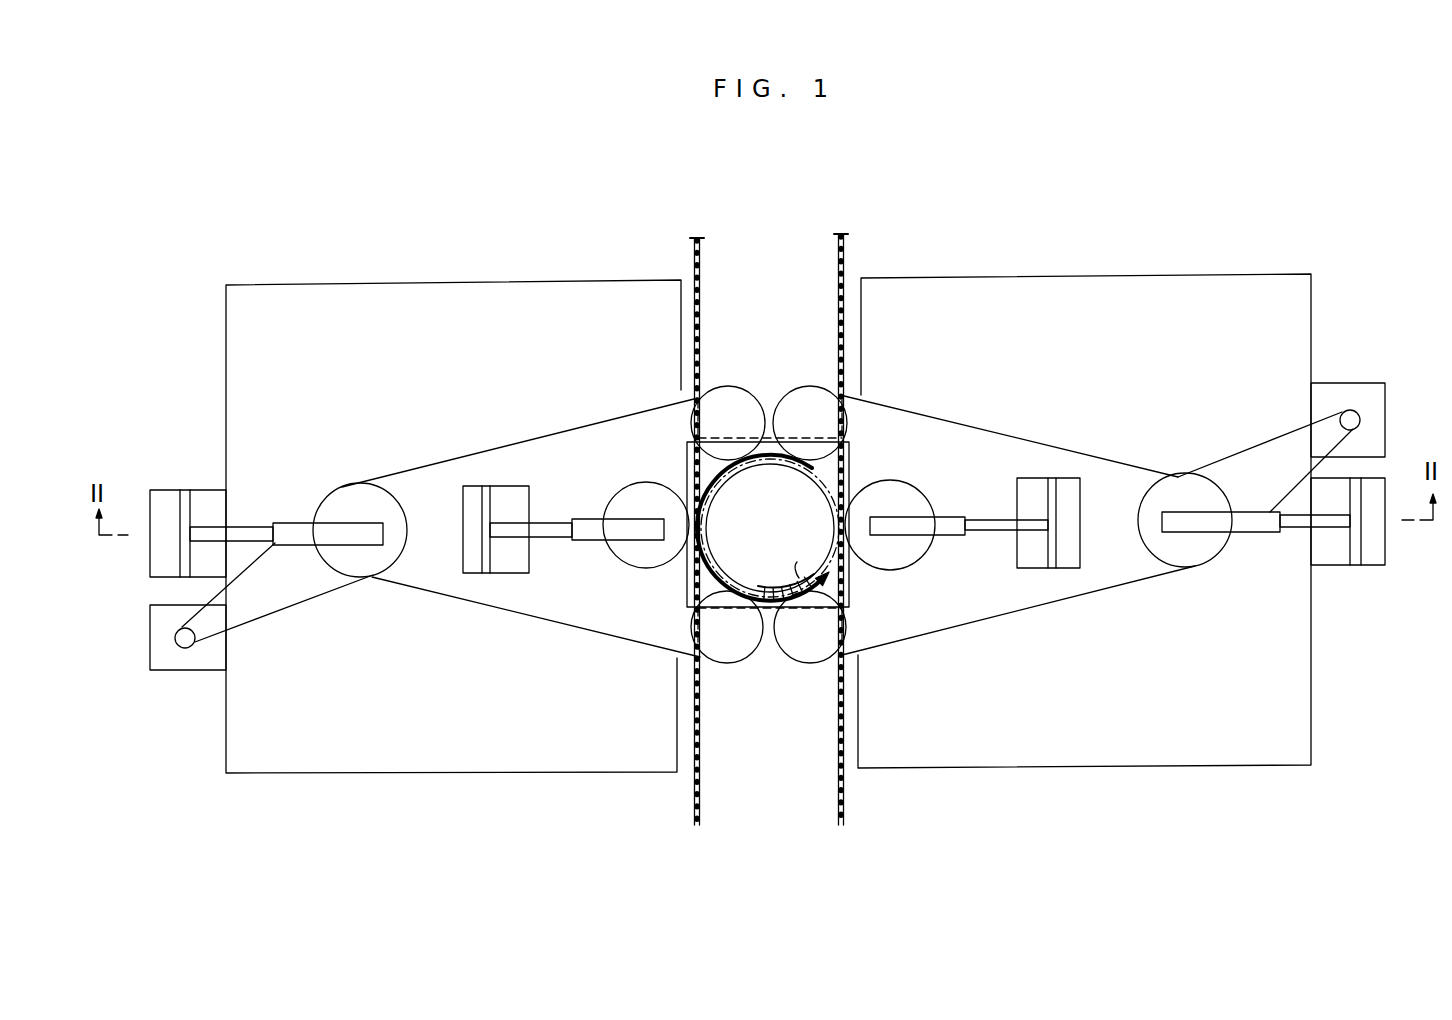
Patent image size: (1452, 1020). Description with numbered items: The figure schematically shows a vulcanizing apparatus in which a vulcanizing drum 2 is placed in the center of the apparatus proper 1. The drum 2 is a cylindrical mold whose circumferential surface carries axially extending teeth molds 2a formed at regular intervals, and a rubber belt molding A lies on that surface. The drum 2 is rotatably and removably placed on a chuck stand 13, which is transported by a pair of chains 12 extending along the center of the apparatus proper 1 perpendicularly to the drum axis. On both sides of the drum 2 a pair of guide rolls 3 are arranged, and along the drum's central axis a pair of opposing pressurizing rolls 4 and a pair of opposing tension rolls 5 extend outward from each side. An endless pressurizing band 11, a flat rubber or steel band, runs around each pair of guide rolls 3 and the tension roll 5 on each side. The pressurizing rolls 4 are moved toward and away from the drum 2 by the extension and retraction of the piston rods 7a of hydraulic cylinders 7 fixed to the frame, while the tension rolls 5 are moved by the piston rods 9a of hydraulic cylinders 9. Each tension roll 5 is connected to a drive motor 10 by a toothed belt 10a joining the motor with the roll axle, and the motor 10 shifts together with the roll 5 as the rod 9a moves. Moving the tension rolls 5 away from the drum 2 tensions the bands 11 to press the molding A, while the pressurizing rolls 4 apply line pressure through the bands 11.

The apparatus proper 1 is at (866, 270).
The vulcanizing drum 2 is at (808, 495).
The teeth molds 2a is at (848, 578).
The guide rolls 3 is at (805, 402).
The pressurizing rolls 4 is at (646, 558).
The tension rolls 5 is at (363, 557).
The hydraulic cylinders 7 is at (510, 563).
The piston rods 7a is at (556, 532).
The hydraulic cylinders 9 is at (155, 578).
The piston rods 9a is at (250, 527).
The drive motor 10 is at (182, 672).
The toothed belt 10a is at (297, 603).
The endless pressurizing band 11 is at (1050, 440).
The chains 12 is at (840, 300).
The chuck stand 13 is at (855, 440).
The rubber belt molding A is at (768, 610).